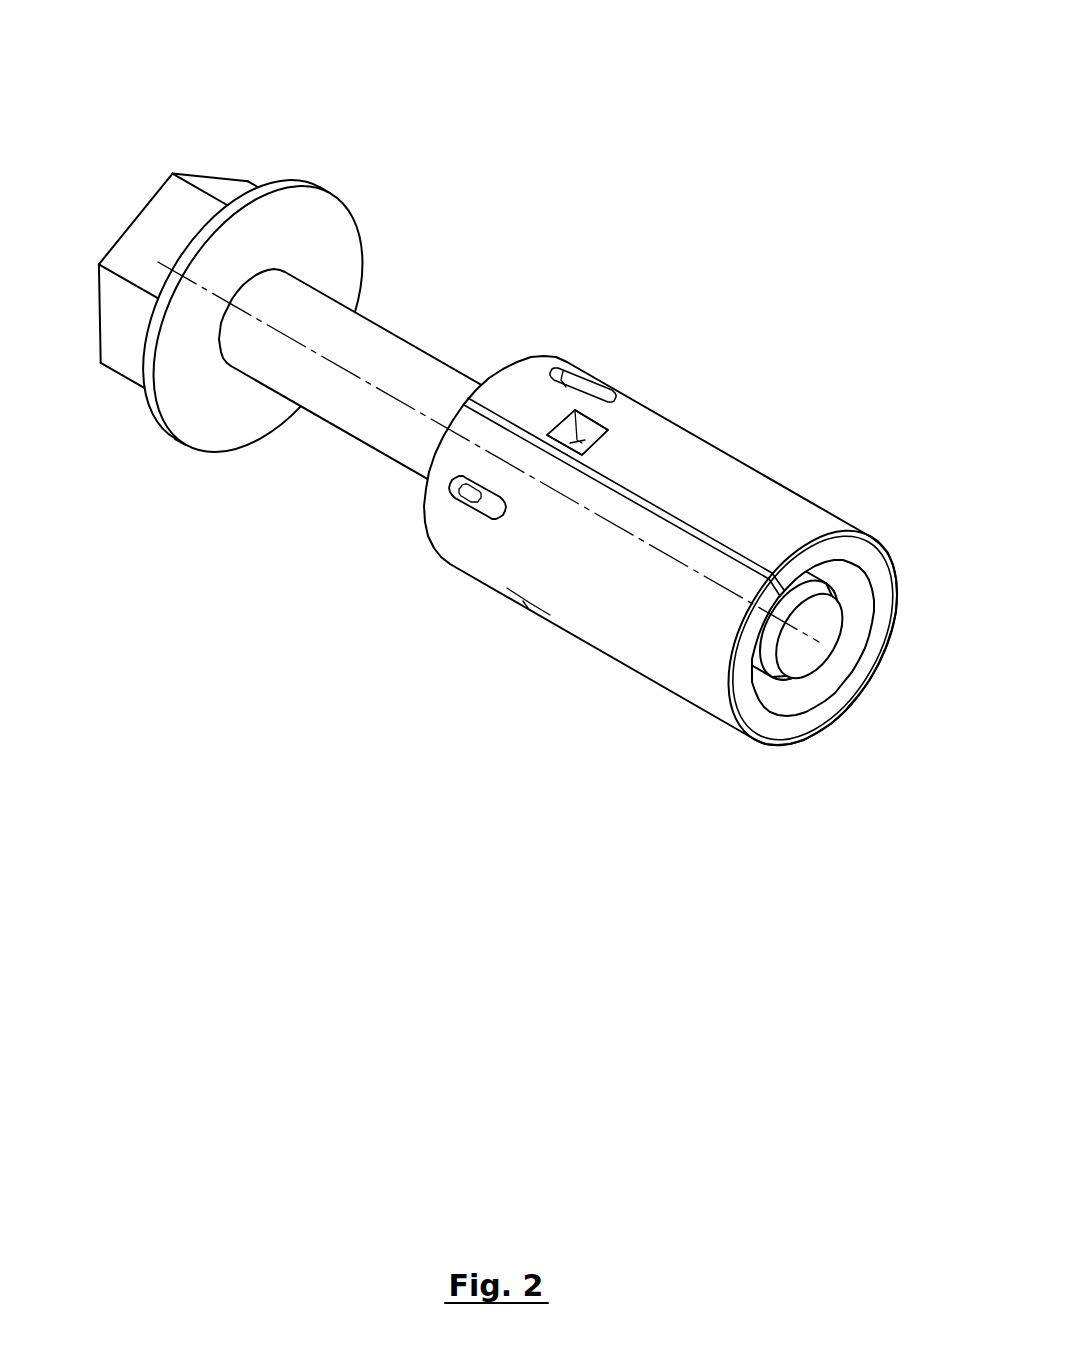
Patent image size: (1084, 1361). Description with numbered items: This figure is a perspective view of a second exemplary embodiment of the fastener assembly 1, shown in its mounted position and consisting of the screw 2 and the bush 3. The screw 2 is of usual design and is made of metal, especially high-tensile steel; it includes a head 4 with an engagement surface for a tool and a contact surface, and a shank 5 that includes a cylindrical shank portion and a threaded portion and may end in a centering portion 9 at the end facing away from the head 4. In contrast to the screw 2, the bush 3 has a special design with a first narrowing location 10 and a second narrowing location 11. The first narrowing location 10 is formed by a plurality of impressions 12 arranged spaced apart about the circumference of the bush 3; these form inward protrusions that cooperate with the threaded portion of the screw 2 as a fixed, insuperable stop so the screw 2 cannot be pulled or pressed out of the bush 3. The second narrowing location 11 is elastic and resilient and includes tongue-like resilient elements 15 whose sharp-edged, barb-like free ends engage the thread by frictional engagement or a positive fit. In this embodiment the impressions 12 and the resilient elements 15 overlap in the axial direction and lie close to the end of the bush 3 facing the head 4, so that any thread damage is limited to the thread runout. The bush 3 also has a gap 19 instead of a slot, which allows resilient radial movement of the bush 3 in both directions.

The fastener assembly 1 is at (513, 396).
The screw 2 is at (511, 371).
The bush 3 is at (561, 396).
The head 4 is at (176, 154).
The shank 5 is at (342, 395).
The centering portion 9 is at (813, 655).
The first narrowing location 10 is at (479, 512).
The second narrowing location 11 is at (583, 445).
The impressions 12 is at (600, 361).
The resilient element 15 is at (577, 432).
The gap 19 is at (713, 540).